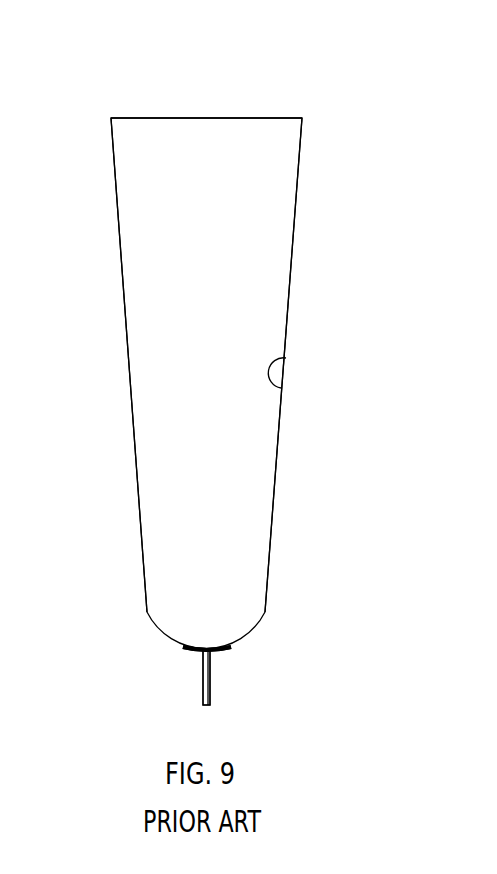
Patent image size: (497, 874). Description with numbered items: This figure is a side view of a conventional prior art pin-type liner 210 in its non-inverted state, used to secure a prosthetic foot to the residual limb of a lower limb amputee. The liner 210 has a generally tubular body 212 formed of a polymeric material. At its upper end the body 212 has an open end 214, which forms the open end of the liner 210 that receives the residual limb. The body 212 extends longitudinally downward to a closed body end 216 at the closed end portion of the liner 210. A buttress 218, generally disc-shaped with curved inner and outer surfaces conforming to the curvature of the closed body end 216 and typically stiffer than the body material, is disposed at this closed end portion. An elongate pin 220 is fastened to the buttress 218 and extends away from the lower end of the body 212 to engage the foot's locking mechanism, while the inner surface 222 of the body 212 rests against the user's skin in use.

The pin-type liner 210 is at (349, 158).
The tubular body 212 is at (122, 285).
The open end 214 is at (185, 118).
The closed body end 216 is at (183, 658).
The buttress 218 is at (225, 654).
The elongate pin 220 is at (211, 693).
The inner surface 222 is at (281, 388).